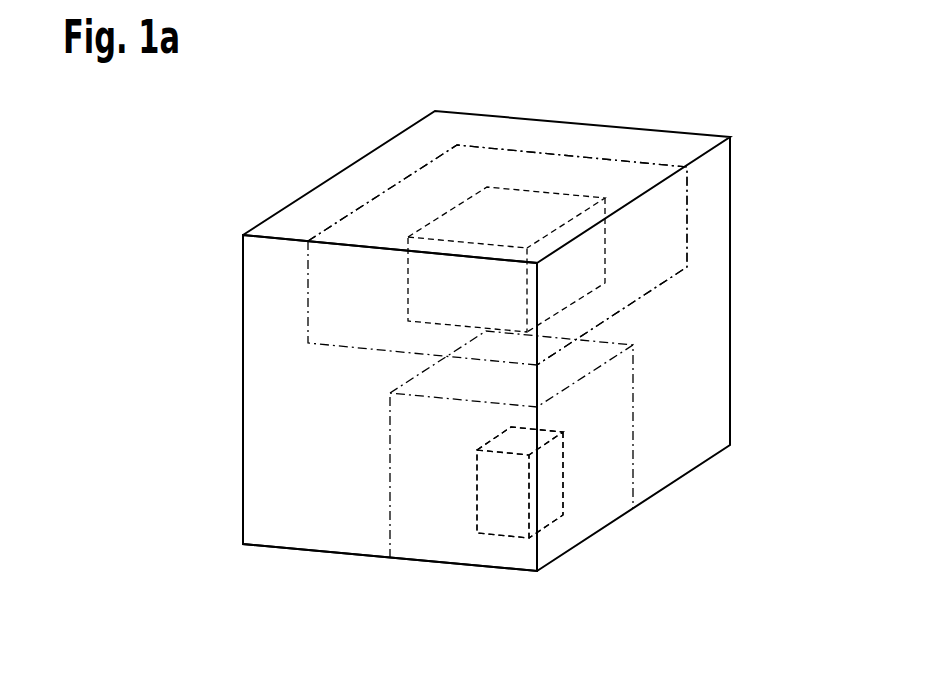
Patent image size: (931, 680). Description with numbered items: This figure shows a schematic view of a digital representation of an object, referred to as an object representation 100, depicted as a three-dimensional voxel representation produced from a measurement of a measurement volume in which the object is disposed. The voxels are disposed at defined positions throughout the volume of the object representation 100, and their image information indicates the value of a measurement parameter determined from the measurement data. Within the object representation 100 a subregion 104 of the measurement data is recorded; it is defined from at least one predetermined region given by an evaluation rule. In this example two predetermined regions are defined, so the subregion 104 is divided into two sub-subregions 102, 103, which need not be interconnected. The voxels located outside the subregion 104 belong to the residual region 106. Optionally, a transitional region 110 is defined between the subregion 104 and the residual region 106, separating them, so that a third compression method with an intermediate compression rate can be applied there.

The object representation 100 is at (340, 143).
The sub-subregion 102 is at (553, 492).
The sub-subregion 103 is at (587, 252).
The subregion 104 is at (540, 185).
The residual region 106 is at (267, 368).
The transitional region 110 is at (493, 147).